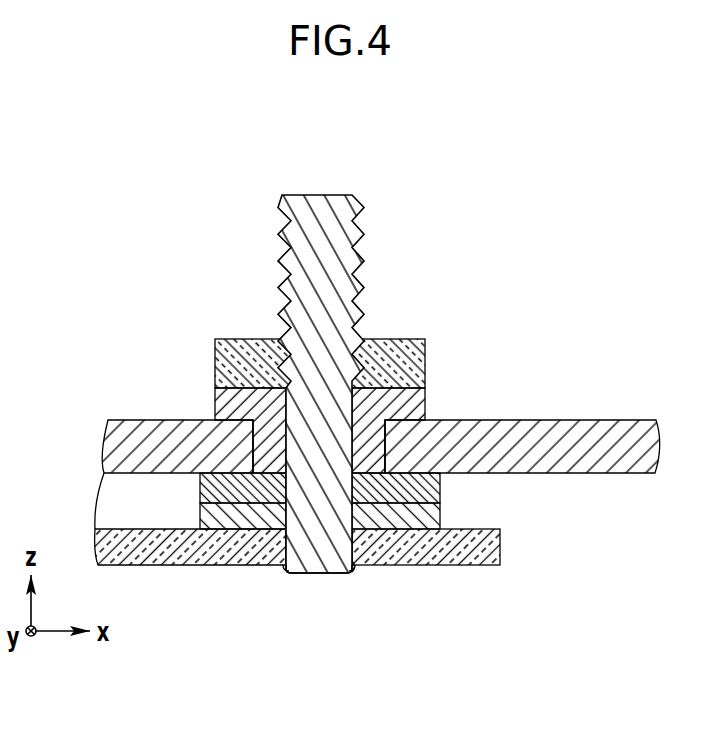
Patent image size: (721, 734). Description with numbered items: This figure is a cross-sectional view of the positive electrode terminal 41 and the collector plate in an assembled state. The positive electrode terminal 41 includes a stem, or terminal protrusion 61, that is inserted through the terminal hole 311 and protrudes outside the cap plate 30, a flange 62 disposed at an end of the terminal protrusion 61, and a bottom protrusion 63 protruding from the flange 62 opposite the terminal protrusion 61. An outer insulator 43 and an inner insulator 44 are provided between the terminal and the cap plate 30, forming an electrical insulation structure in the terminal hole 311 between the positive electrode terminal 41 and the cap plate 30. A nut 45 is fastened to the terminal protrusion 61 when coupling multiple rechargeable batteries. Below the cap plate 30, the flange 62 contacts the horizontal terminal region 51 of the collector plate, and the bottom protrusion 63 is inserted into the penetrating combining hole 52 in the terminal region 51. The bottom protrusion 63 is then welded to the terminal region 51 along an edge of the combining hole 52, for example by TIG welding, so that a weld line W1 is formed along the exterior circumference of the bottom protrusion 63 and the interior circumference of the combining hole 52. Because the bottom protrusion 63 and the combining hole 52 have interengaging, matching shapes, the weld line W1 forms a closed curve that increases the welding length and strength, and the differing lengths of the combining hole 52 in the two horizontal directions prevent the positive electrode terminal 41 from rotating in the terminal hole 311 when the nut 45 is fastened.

The positive electrode terminal 41 is at (423, 222).
The terminal protrusion 61 is at (287, 262).
The nut 45 is at (235, 358).
The outer insulator 43 is at (417, 398).
The terminal hole 311 is at (257, 432).
The cap plate 30 is at (623, 442).
The inner insulator 44 is at (430, 482).
The flange 62 is at (417, 517).
The terminal region 51 is at (175, 548).
The combining hole 52 is at (300, 553).
The bottom protrusion 63 is at (332, 567).
The weld line W1 is at (355, 567).